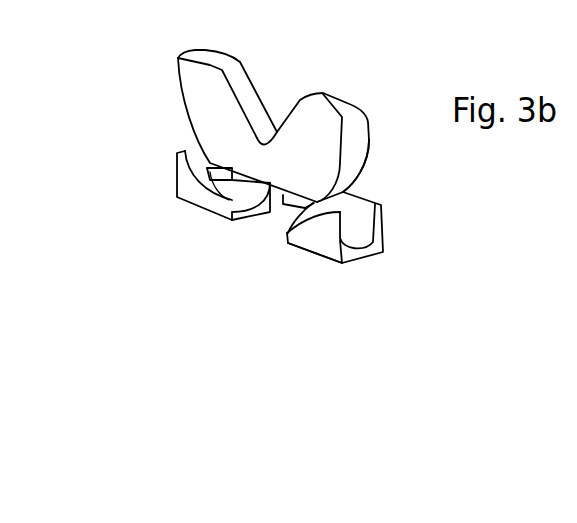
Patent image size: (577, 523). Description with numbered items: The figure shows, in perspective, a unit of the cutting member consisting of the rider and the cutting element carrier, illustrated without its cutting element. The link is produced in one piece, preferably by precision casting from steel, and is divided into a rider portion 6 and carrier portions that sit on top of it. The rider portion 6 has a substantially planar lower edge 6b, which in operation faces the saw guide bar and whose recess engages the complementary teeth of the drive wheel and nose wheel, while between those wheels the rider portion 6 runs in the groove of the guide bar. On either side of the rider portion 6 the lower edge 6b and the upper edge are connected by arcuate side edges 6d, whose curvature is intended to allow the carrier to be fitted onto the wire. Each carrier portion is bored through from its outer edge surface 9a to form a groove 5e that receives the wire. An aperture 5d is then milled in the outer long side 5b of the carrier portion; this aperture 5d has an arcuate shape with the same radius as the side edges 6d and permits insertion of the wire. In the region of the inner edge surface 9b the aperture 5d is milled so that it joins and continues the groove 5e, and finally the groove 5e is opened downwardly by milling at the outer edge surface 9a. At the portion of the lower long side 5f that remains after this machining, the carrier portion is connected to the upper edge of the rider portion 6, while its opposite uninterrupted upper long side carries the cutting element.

The rider portion 6 is at (321, 105).
The lower edge of the rider portion 6b is at (337, 103).
The arcuate side edges 6d is at (352, 158).
The lower long side of the carrier portion 5f is at (208, 163).
The inner edge surface of the carrier portion 9b is at (182, 201).
The aperture 5d is at (315, 202).
The outer long side of the carrier portion 5b is at (327, 242).
The groove 5e is at (365, 237).
The outer edge surface of the carrier portion 9a is at (371, 262).